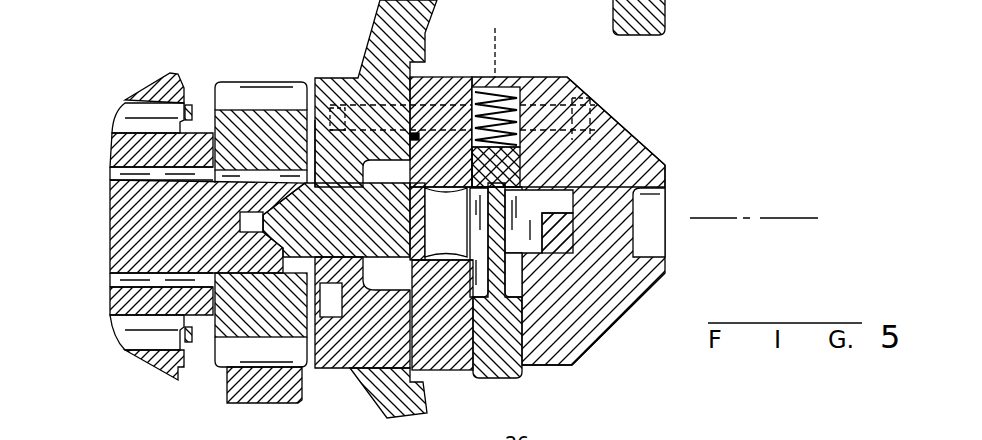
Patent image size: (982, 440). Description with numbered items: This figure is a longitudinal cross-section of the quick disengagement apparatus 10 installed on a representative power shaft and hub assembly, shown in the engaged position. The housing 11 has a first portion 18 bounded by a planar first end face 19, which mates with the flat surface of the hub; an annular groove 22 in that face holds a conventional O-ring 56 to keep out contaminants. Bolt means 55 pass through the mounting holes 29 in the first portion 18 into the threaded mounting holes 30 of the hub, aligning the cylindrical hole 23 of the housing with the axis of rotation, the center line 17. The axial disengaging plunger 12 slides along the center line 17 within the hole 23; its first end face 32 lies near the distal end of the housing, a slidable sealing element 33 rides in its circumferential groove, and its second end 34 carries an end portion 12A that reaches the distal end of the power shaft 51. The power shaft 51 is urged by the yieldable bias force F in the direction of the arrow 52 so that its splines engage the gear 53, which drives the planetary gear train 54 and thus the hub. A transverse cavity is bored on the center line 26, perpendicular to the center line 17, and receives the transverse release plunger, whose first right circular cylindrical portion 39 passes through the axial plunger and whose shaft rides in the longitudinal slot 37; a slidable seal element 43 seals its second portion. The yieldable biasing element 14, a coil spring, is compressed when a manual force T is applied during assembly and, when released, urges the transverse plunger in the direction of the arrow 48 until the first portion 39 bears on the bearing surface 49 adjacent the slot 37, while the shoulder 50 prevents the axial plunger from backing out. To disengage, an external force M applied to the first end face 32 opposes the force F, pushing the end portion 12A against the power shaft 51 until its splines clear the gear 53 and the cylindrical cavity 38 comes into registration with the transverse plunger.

The quick disengagement apparatus 10 is at (689, 130).
The housing 11 is at (613, 335).
The axial disengaging plunger 12 is at (563, 237).
The end portion 12A is at (325, 185).
The yieldable biasing element 14 is at (497, 88).
The center line 17 is at (790, 218).
The first portion 18 is at (547, 365).
The first end face 19 is at (418, 313).
The annular groove 22 is at (454, 293).
The cylindrical hole 23 is at (652, 243).
The center line 26 is at (500, 38).
The mounting holes 29 is at (441, 100).
The threaded mounting holes 30 is at (338, 103).
The first end face 32 is at (670, 186).
The slidable sealing element 33 is at (614, 247).
The second end 34 is at (365, 227).
The longitudinal slot 37 is at (518, 237).
The circular cylindrical cavity 38 is at (613, 147).
The first right circular cylindrical portion 39 is at (526, 166).
The slidable seal element 43 is at (473, 325).
The arrow 48 is at (451, 301).
The bearing surface 49 is at (600, 109).
The shoulder 50 is at (480, 190).
The power shaft 51 is at (110, 243).
The arrow 52 is at (705, 177).
The gear 53 is at (217, 118).
The planetary gear train 54 is at (227, 387).
The bolt means 55 is at (600, 104).
The O-ring 56 is at (416, 137).
The force F is at (104, 207).
The external force M is at (671, 232).
The manual force T is at (498, 385).